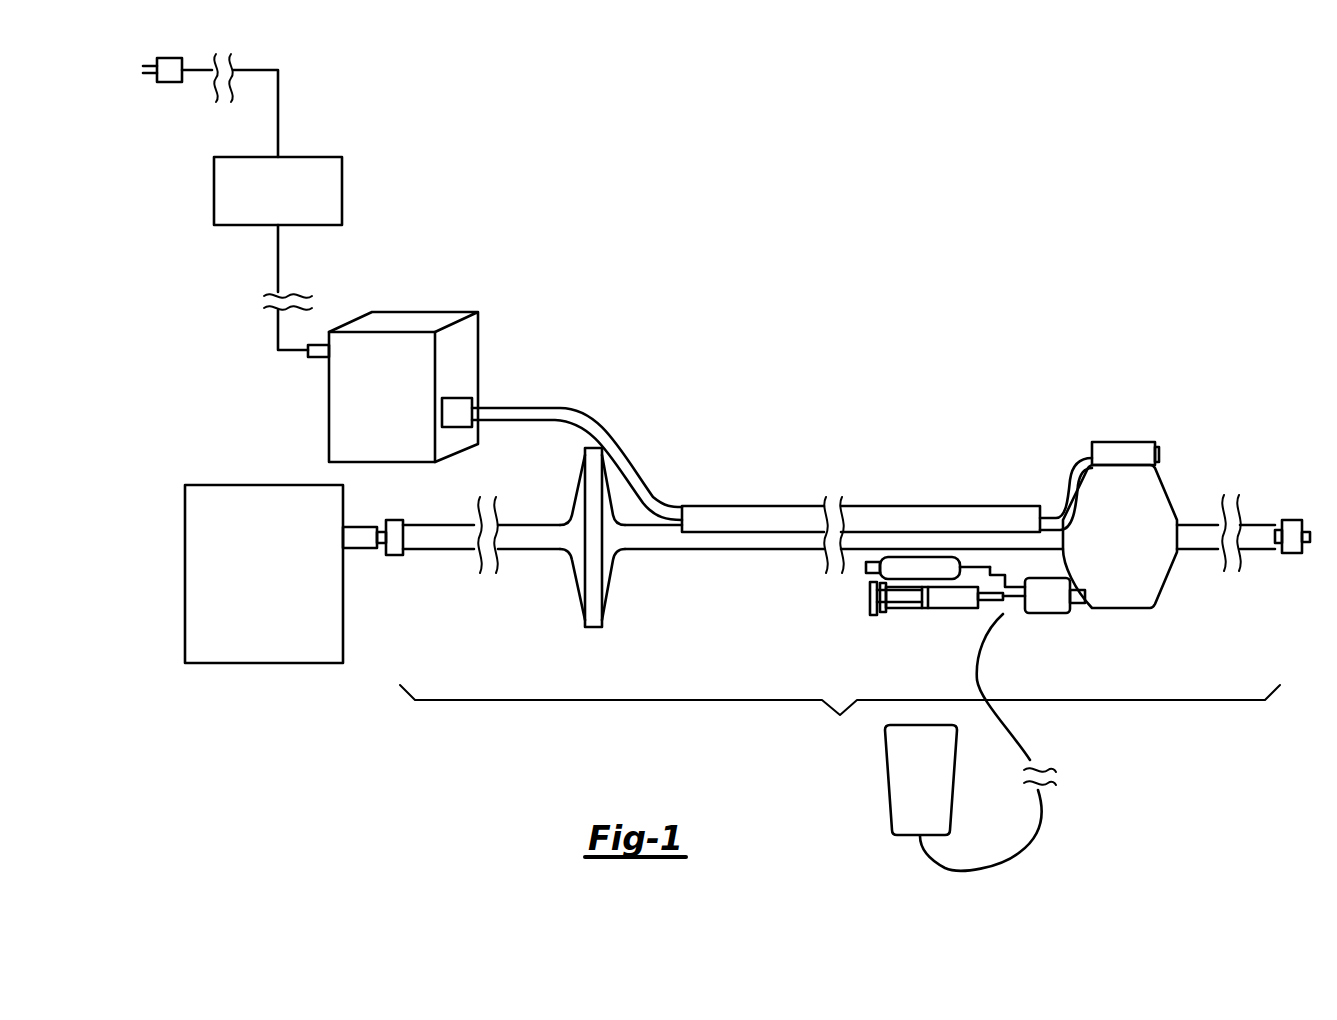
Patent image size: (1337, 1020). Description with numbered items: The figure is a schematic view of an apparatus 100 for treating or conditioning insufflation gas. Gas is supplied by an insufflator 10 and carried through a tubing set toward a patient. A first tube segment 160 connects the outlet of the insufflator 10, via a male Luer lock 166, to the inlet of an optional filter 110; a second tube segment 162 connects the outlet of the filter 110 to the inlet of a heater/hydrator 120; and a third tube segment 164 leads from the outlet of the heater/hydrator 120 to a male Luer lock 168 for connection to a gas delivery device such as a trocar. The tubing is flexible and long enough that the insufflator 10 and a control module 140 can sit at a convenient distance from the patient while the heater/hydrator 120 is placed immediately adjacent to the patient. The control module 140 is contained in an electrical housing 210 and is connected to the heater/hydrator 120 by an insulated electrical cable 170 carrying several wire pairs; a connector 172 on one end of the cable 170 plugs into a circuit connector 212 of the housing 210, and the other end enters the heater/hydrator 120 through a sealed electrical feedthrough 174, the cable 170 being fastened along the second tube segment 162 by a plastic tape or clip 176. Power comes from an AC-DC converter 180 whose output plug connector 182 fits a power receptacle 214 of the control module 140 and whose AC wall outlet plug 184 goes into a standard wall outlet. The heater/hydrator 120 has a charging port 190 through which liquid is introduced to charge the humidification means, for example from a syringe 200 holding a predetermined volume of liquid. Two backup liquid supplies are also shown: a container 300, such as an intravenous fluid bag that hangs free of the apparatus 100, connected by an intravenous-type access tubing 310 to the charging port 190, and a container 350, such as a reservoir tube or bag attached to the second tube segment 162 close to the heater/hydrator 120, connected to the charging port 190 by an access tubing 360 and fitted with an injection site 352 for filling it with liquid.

The insufflator 10 is at (285, 665).
The apparatus for treating or conditioning insufflation gas 100 is at (840, 716).
The filter 110 is at (593, 628).
The heater/hydrator 120 is at (1127, 609).
The control module 140 is at (403, 387).
The first tube segment 160 is at (536, 551).
The second tube segment 162 is at (718, 551).
The third tube segment 164 is at (1203, 551).
The male Luer lock 166 is at (394, 556).
The male Luer lock 168 is at (1292, 554).
The insulated electrical cable 170 is at (562, 406).
The connector 172 is at (455, 437).
The sealed electrical feedthrough 174 is at (1122, 442).
The plastic tape or clip 176 is at (908, 506).
The AC-DC converter 180 is at (342, 190).
The plug connector 182 is at (308, 358).
The AC wall outlet plug 184 is at (168, 83).
The charging port 190 is at (1026, 609).
The syringe 200 is at (952, 600).
The electrical housing 210 is at (379, 361).
The circuit connector 212 is at (441, 430).
The power receptacle 214 is at (329, 367).
The container 300 is at (886, 797).
The access tubing 310 is at (1030, 828).
The container 350 is at (923, 566).
The injection site 352 is at (866, 566).
The access tubing 360 is at (991, 566).